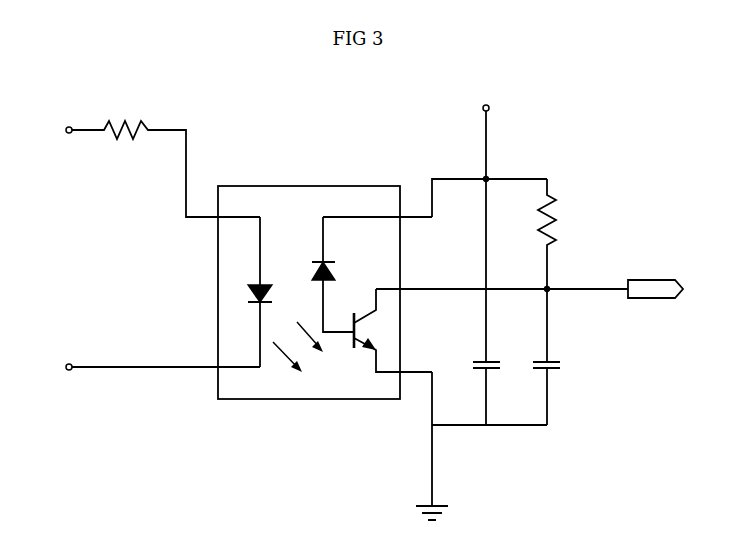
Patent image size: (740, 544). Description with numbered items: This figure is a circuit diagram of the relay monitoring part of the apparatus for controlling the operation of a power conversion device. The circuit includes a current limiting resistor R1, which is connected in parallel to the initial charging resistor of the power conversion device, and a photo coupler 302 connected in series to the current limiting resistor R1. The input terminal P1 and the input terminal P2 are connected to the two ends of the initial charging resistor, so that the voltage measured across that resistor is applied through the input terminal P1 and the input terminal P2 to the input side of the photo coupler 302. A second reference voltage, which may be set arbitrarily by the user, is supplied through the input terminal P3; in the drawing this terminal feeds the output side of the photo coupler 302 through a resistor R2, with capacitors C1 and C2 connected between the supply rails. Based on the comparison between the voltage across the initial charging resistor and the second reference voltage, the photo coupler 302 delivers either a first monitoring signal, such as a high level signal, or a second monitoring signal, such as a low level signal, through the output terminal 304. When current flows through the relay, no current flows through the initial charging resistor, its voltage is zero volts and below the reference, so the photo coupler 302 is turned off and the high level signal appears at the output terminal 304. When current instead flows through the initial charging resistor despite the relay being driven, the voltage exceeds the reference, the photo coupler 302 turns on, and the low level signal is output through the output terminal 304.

The photo coupler 302 is at (310, 186).
The output terminal 304 is at (650, 280).
The input terminal P1 is at (50, 130).
The input terminal P2 is at (144, 367).
The input terminal P3 is at (485, 221).
The current limiting resistor R1 is at (166, 153).
The resistor R2 is at (563, 270).
The capacitor C1 is at (475, 393).
The capacitor C2 is at (556, 393).